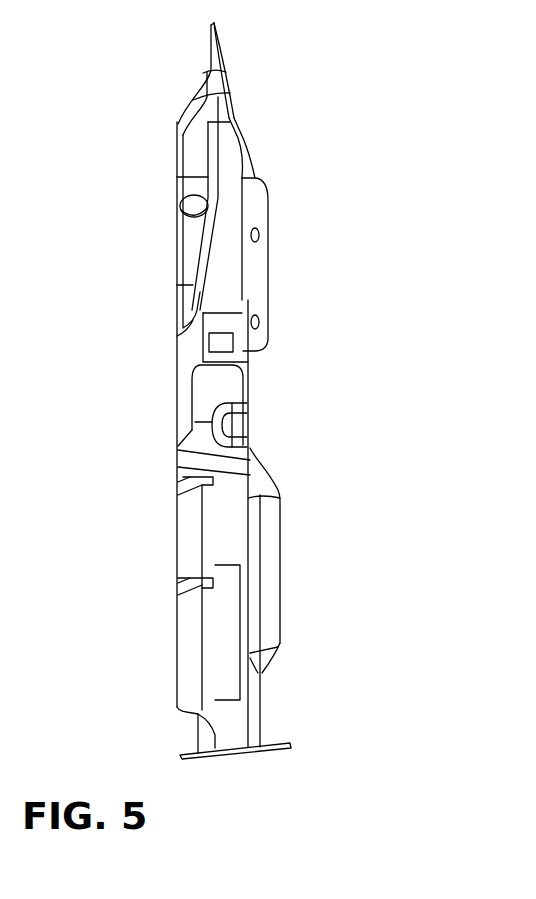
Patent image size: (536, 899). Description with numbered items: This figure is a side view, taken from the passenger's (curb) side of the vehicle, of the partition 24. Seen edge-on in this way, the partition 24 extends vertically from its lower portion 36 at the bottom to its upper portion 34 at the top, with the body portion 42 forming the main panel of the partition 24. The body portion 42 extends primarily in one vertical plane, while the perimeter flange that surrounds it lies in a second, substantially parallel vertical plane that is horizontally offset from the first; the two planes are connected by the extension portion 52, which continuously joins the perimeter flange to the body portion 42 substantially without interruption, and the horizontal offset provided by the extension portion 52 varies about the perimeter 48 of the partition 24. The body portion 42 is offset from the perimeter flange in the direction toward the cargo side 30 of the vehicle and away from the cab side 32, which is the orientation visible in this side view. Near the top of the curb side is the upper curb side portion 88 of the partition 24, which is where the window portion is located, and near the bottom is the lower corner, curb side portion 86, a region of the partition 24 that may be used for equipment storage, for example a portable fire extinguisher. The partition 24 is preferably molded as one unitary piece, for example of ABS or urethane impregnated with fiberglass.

The perimeter 48 is at (213, 23).
The partition 24 is at (180, 95).
The upper portion 34 is at (285, 106).
The extension portion 52 is at (248, 141).
The cab side 32 is at (275, 165).
The upper curb side portion 88 is at (153, 154).
The cargo side 30 is at (153, 204).
The body portion 42 is at (190, 342).
The lower corner, curb side portion 86 is at (188, 555).
The lower portion 36 is at (145, 642).